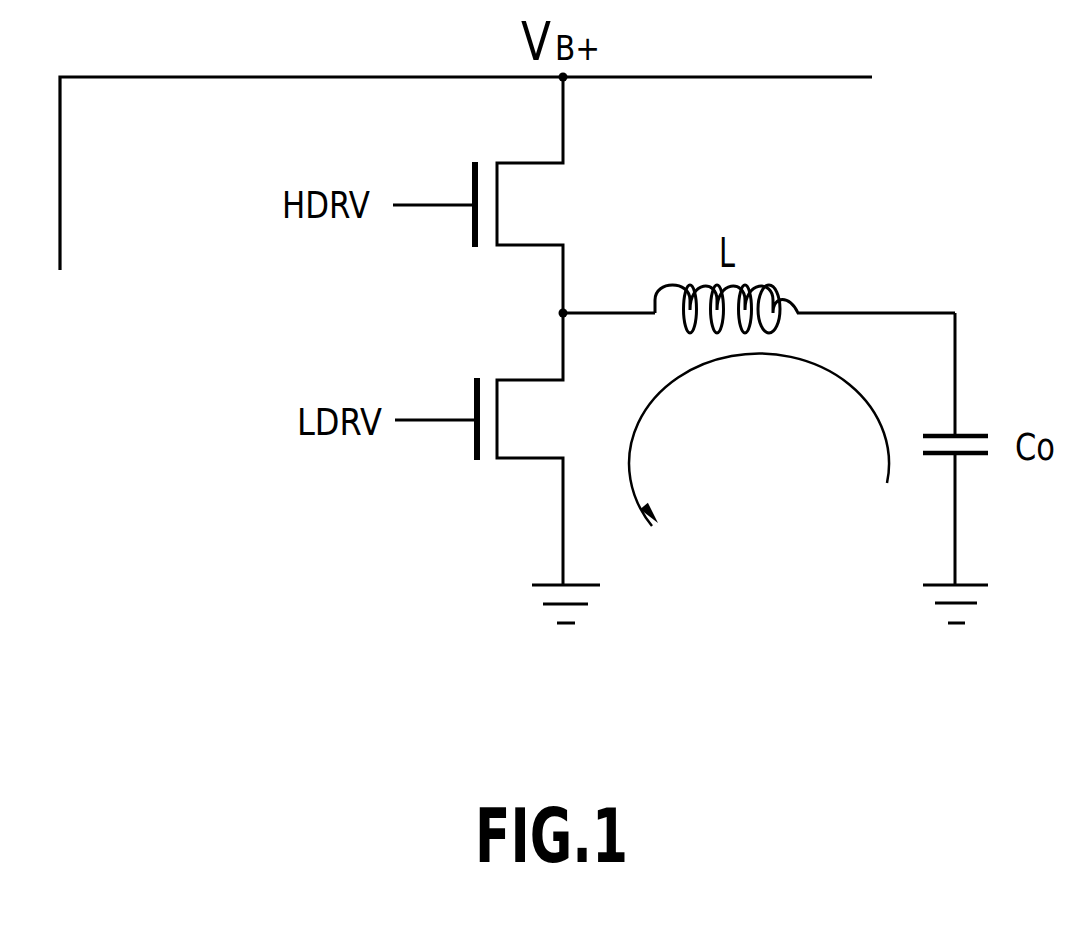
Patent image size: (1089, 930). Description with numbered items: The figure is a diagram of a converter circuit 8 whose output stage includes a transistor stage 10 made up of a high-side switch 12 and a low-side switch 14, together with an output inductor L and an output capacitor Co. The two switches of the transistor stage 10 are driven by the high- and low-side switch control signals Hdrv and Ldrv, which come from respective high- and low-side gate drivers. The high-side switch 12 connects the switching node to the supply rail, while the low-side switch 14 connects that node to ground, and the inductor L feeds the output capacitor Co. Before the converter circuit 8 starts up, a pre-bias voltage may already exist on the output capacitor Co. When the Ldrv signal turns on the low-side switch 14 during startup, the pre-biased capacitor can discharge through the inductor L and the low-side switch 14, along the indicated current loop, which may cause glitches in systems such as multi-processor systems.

The converter circuit 8 is at (745, 77).
The transistor stage 10 is at (500, 307).
The high-side switch 12 is at (572, 200).
The low-side switch 14 is at (575, 425).